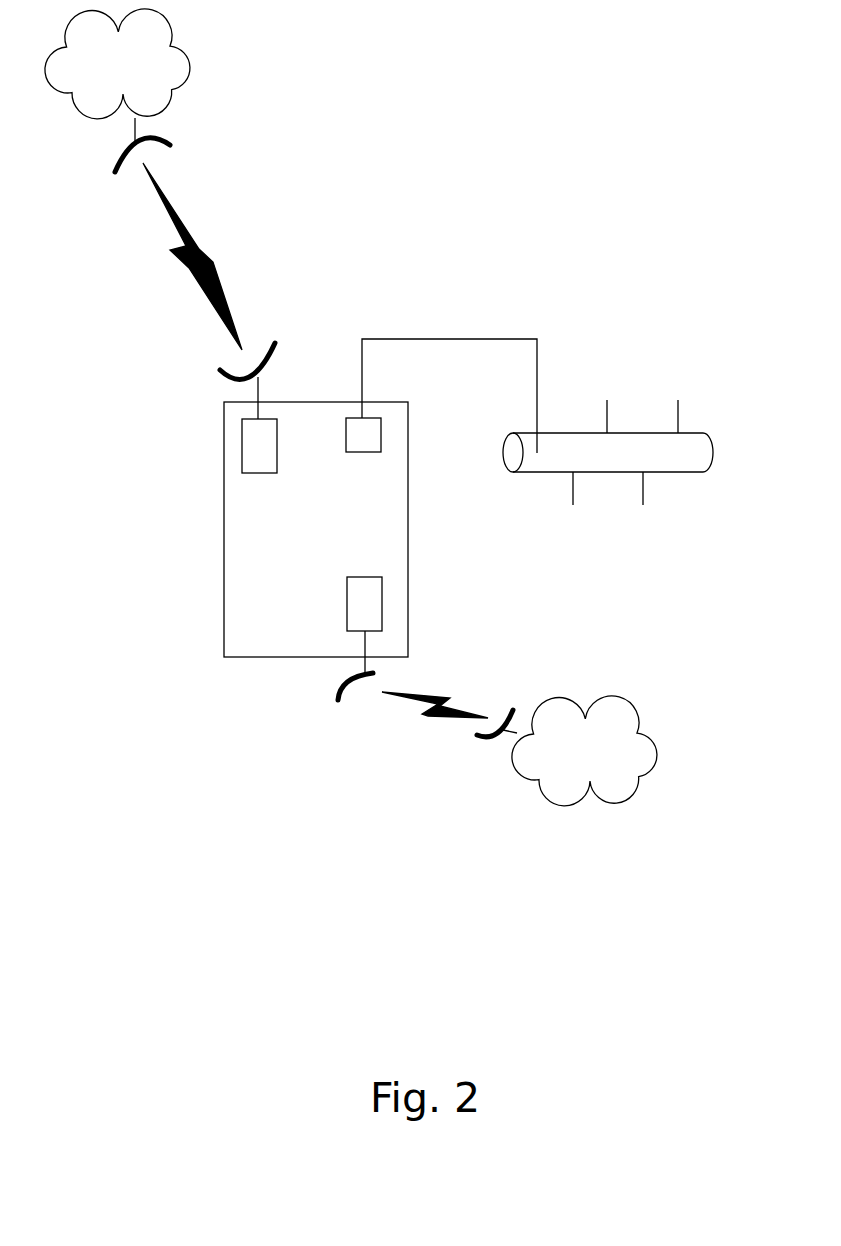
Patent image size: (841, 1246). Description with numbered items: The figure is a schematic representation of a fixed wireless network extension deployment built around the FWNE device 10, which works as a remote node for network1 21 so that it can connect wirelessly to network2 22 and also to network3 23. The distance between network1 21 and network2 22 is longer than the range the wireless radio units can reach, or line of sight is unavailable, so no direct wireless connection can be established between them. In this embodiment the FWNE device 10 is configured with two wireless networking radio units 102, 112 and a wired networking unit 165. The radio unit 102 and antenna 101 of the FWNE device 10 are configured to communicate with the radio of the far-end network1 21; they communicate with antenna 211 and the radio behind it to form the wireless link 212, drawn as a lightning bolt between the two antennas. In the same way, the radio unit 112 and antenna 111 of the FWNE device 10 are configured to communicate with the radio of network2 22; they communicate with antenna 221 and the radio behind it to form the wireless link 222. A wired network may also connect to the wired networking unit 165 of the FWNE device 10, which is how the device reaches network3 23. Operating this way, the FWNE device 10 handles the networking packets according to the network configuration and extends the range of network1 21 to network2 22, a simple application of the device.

The FWNE device 10 is at (218, 573).
The network1 21 is at (182, 80).
The antenna 211 is at (150, 137).
The wireless link 212 is at (200, 237).
The antenna 101 is at (225, 370).
The wireless networking radio unit 102 is at (242, 445).
The wired networking unit 165 is at (382, 432).
The network3 23 is at (668, 472).
The wireless networking radio unit 112 is at (382, 622).
The antenna 111 is at (335, 690).
The wireless link 222 is at (447, 703).
The antenna 221 is at (487, 737).
The network2 22 is at (618, 803).